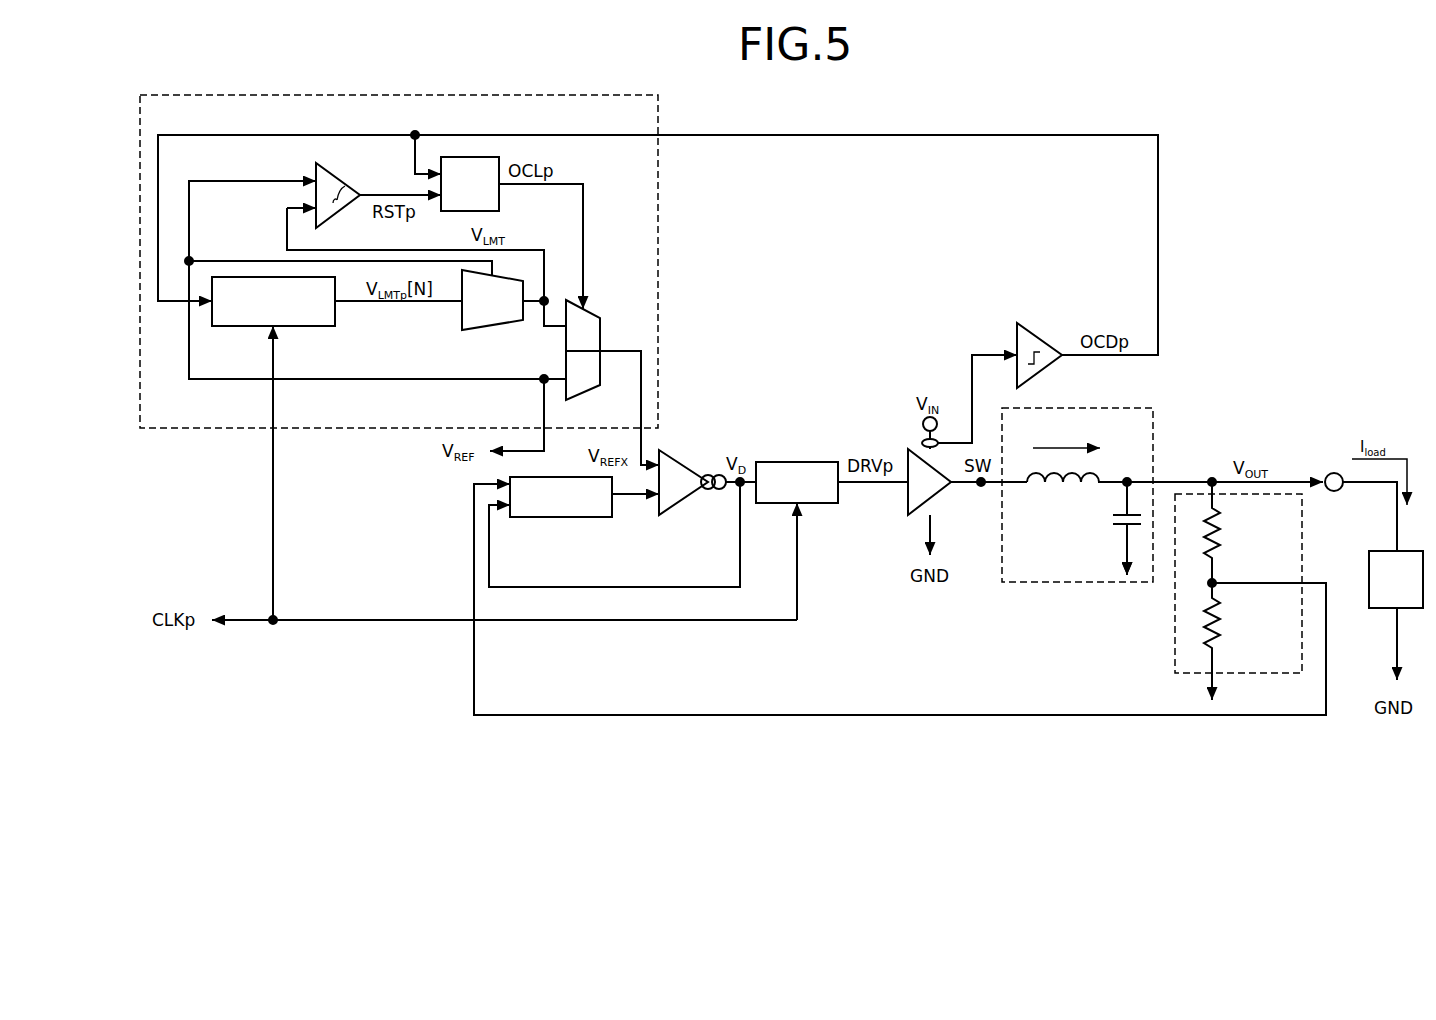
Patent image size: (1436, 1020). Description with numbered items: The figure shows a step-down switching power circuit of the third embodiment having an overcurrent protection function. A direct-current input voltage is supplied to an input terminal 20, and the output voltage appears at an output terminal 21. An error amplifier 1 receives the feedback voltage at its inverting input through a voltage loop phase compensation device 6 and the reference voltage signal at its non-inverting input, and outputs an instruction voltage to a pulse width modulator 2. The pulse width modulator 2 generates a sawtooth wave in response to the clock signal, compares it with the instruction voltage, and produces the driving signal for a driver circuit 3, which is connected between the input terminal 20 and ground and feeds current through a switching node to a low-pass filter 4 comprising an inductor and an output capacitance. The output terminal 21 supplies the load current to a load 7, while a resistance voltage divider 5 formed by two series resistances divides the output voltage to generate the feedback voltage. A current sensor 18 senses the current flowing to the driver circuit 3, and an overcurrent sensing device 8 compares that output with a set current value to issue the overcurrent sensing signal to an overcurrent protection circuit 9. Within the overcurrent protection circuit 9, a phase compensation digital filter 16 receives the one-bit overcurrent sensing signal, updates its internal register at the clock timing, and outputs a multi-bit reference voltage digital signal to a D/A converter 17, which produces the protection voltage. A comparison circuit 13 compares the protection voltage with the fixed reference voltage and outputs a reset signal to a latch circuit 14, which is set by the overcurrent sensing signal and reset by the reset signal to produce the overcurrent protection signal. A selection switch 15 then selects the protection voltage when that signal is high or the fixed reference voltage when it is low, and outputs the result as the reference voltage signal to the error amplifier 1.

The error amplifier 1 is at (689, 496).
The pulse width modulator 2 is at (803, 462).
The driver circuit 3 is at (905, 502).
The low-pass filter 4 is at (1153, 425).
The resistance voltage divider 5 is at (1175, 650).
The voltage loop phase compensation device 6 is at (576, 517).
The load 7 is at (1413, 551).
The overcurrent sensing device 8 is at (1038, 342).
The overcurrent protection circuit 9 is at (658, 213).
The comparison circuit 13 is at (340, 183).
The latch circuit 14 is at (476, 157).
The selection switch 15 is at (590, 313).
The phase compensation digital filter 16 is at (300, 326).
The D/A converter 17 is at (496, 330).
The current sensor 18 is at (922, 443).
The input terminal 20 is at (922, 420).
The output terminal 21 is at (1332, 473).